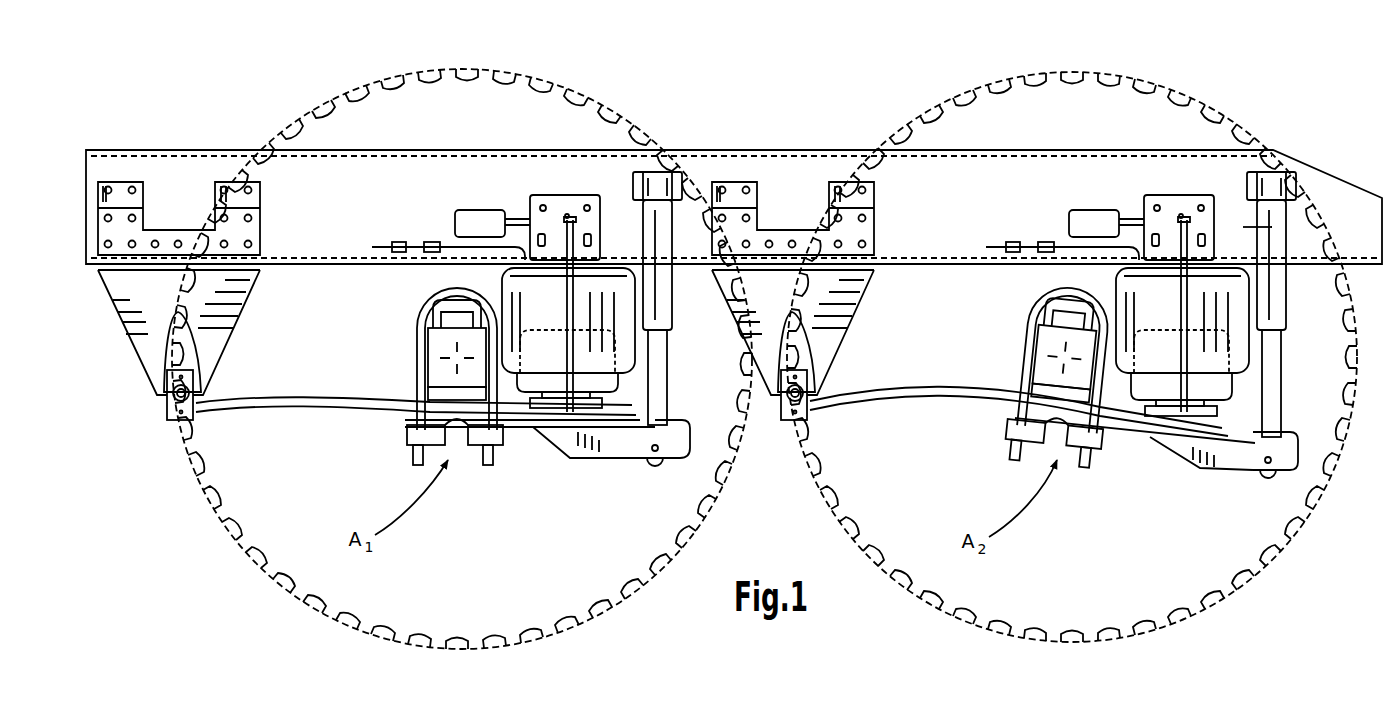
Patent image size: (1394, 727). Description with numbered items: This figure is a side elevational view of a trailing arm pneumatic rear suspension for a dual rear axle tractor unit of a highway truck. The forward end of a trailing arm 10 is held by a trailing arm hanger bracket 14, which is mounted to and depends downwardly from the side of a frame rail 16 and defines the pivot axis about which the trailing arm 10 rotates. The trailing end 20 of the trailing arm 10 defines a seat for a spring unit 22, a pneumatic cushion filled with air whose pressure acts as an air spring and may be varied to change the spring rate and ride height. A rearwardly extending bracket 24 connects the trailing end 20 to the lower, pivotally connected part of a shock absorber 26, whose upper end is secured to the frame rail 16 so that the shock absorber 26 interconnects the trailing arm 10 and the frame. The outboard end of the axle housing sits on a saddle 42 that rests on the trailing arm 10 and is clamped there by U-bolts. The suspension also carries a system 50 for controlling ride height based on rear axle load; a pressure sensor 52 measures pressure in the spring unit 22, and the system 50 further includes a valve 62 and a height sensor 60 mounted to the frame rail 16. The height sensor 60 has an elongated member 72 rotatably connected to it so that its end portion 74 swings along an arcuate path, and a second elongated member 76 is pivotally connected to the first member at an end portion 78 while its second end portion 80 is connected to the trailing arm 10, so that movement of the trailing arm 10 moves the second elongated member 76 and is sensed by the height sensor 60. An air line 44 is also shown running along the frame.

The trailing arm 10 is at (320, 422).
The trailing arm hanger bracket 14 is at (117, 332).
The frame rail 16 is at (307, 213).
The trailing end 20 is at (557, 430).
The spring unit 22 is at (558, 315).
The rearwardly extending bracket 24 is at (635, 452).
The shock absorber 26 is at (672, 376).
The saddle 42 is at (420, 395).
The air line 44 is at (384, 216).
The system for controlling ride height 50 is at (472, 174).
The pressure sensor 52 is at (430, 242).
The height sensor 60 is at (485, 220).
The valve 62 is at (396, 243).
The elongated member 72 is at (1163, 218).
The end portion 74 is at (1183, 240).
The second elongated member 76 is at (1188, 302).
The end portion 78 is at (1272, 227).
The second end portion 80 is at (1183, 414).